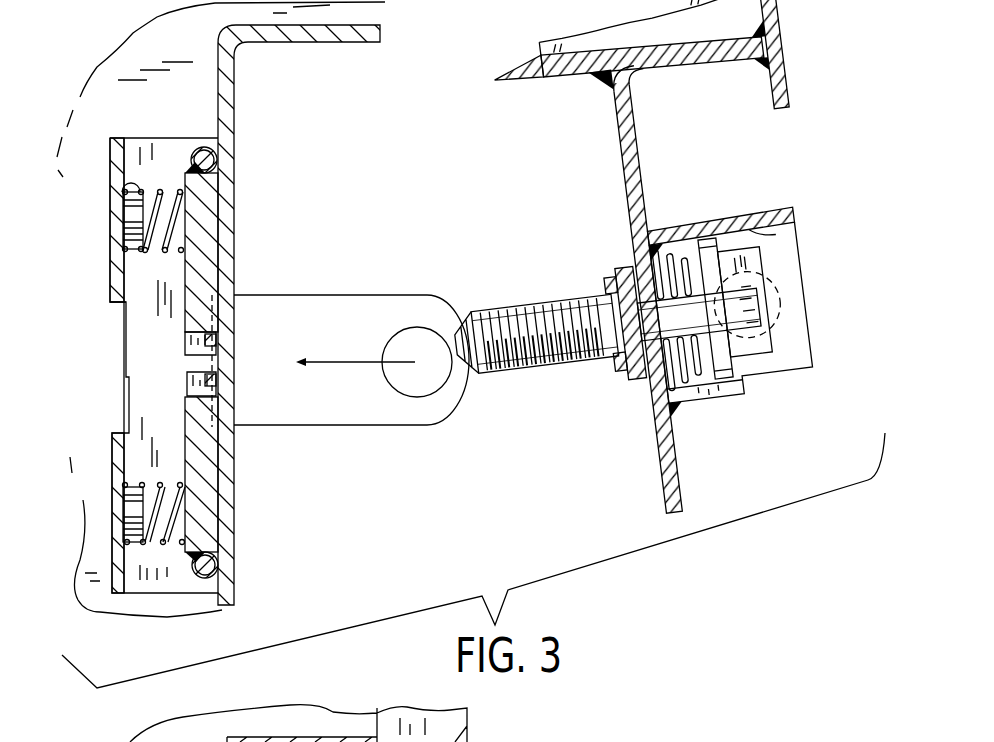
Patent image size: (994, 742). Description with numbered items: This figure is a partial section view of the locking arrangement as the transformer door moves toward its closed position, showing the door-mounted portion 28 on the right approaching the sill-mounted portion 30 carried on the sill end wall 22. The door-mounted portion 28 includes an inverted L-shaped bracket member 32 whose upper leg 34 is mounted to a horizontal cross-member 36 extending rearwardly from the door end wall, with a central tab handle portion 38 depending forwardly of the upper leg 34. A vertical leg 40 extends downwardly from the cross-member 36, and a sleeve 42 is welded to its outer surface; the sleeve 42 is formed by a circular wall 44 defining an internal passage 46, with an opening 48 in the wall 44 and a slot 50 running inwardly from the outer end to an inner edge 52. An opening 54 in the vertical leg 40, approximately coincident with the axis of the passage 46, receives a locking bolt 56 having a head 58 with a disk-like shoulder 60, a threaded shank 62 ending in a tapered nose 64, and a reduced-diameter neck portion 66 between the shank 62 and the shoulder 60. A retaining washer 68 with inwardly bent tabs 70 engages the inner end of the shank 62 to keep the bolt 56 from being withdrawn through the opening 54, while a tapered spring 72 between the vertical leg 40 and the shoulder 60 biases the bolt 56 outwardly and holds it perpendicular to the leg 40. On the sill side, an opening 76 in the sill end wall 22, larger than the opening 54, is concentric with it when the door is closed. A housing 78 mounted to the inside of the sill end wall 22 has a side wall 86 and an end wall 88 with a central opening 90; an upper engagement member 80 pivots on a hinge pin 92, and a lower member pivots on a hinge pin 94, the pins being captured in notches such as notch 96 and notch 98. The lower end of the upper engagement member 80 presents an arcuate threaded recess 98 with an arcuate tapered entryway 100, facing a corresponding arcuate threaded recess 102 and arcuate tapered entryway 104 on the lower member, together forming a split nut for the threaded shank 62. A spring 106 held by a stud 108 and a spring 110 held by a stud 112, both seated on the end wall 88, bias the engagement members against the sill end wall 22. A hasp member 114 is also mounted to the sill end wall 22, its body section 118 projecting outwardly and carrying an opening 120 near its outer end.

The sill end wall 22 is at (236, 512).
The door-mounted portion 28 is at (798, 130).
The sill-mounted portion 30 is at (383, 182).
The bracket member 32 is at (596, 186).
The upper leg 34 is at (706, 66).
The horizontal cross-member 36 is at (672, 52).
The central tab handle portion 38 is at (772, 47).
The vertical leg 40 is at (638, 194).
The sleeve 42 is at (796, 205).
The circular wall 44 is at (738, 224).
The internal passage 46 is at (767, 228).
The opening 48 is at (785, 308).
The slot 50 is at (806, 366).
The inner edge 52 is at (733, 394).
The opening 54 is at (632, 356).
The locking bolt 56 is at (585, 378).
The head 58 is at (752, 270).
The disk-like shoulder 60 is at (760, 370).
The threaded shank 62 is at (556, 294).
The tapered nose 64 is at (472, 372).
The neck portion 66 is at (642, 278).
The retaining washer 68 is at (626, 272).
The tabs 70 is at (622, 284).
The spring 72 is at (693, 387).
The opening 76 is at (232, 408).
The housing 78 is at (86, 487).
The upper engagement member 80 is at (175, 272).
The side wall 86 is at (128, 420).
The end wall 88 is at (110, 246).
The central opening 90 is at (118, 306).
The hinge pin 92 is at (197, 151).
The hinge pin 94 is at (203, 578).
The notch 96 is at (218, 162).
The arcuate threaded recess 98 is at (185, 349).
The arcuate tapered entryway 100 is at (216, 334).
The arcuate threaded recess 102 is at (186, 383).
The arcuate tapered entryway 104 is at (218, 395).
The spring 106 is at (135, 190).
The stud 108 is at (118, 204).
The spring 110 is at (145, 548).
The stud 112 is at (130, 521).
The hasp member 114 is at (375, 280).
The body section 118 is at (388, 295).
The opening 120 is at (410, 382).